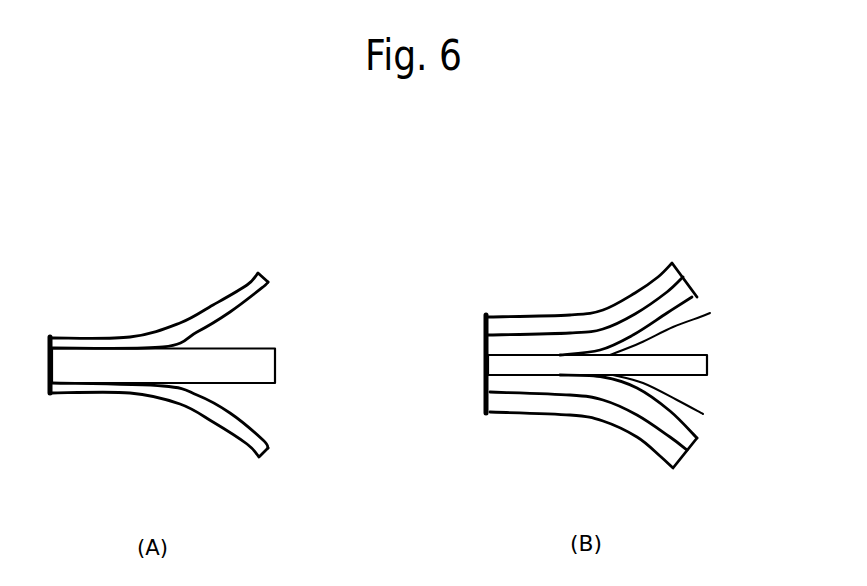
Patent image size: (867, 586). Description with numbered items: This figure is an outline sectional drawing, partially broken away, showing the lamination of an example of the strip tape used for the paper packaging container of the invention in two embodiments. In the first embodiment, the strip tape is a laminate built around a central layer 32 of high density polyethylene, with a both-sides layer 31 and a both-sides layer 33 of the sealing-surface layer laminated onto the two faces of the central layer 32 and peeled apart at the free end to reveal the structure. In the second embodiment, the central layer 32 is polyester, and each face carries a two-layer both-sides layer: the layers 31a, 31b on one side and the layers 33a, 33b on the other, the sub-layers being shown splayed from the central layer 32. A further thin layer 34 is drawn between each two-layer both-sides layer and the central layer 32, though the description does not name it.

The both-sides layer 31 is at (261, 285).
The central layer 32 is at (267, 360).
The both-sides layer 33 is at (262, 434).
The both-sides layer 31a is at (673, 262).
The both-sides layer 31b is at (698, 298).
The both-sides layer 33a is at (696, 437).
The both-sides layer 33b is at (673, 467).
The adhesive layer 34 is at (708, 314).